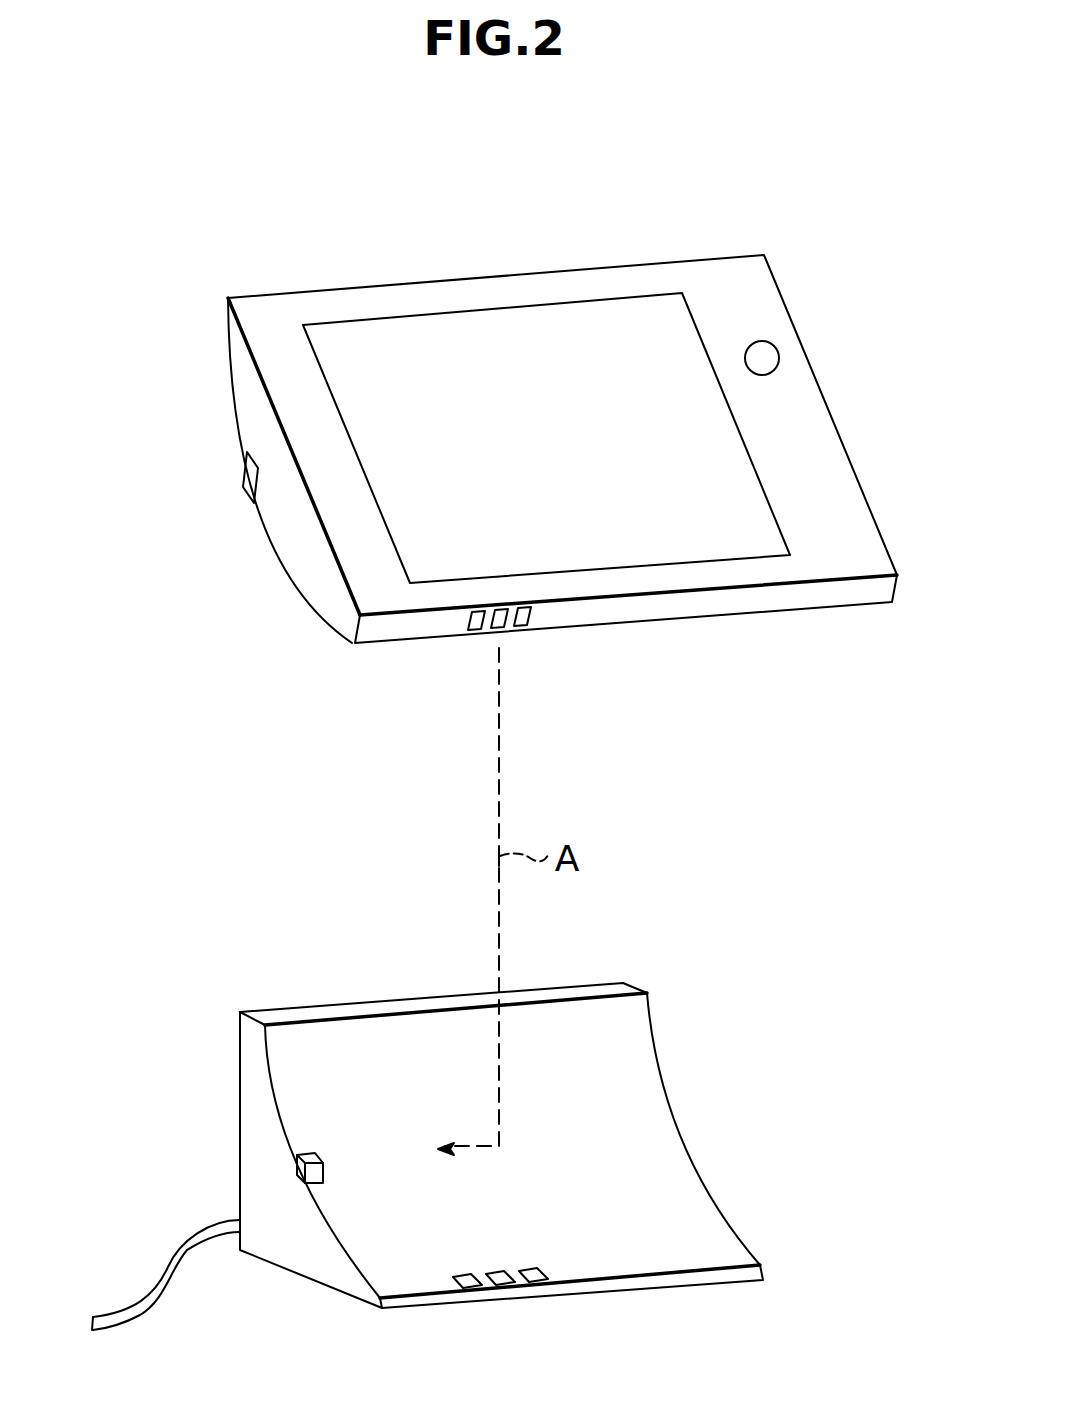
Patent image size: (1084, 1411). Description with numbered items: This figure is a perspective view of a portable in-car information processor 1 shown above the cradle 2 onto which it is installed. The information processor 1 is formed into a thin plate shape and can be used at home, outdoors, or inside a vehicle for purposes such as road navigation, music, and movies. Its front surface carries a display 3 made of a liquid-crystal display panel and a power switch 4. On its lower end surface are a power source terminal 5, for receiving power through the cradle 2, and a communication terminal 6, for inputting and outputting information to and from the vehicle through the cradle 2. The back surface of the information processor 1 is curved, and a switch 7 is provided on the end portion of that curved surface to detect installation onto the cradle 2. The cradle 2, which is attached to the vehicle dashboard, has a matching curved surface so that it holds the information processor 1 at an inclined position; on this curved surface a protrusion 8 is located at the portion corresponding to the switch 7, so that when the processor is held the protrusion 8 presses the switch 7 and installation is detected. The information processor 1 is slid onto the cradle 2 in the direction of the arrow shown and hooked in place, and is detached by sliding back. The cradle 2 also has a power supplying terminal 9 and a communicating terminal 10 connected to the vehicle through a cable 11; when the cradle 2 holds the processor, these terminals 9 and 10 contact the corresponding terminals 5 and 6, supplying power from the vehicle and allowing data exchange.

The information processor 1 is at (750, 188).
The cradle 2 is at (692, 1263).
The display 3 is at (477, 330).
The power switch 4 is at (768, 355).
The power source terminal 5 is at (468, 647).
The communication terminal 6 is at (530, 647).
The switch 7 is at (243, 483).
The protrusion 8 is at (297, 1165).
The power supplying terminal 9 is at (475, 1285).
The communicating terminal 10 is at (545, 1284).
The cable 11 is at (180, 1278).